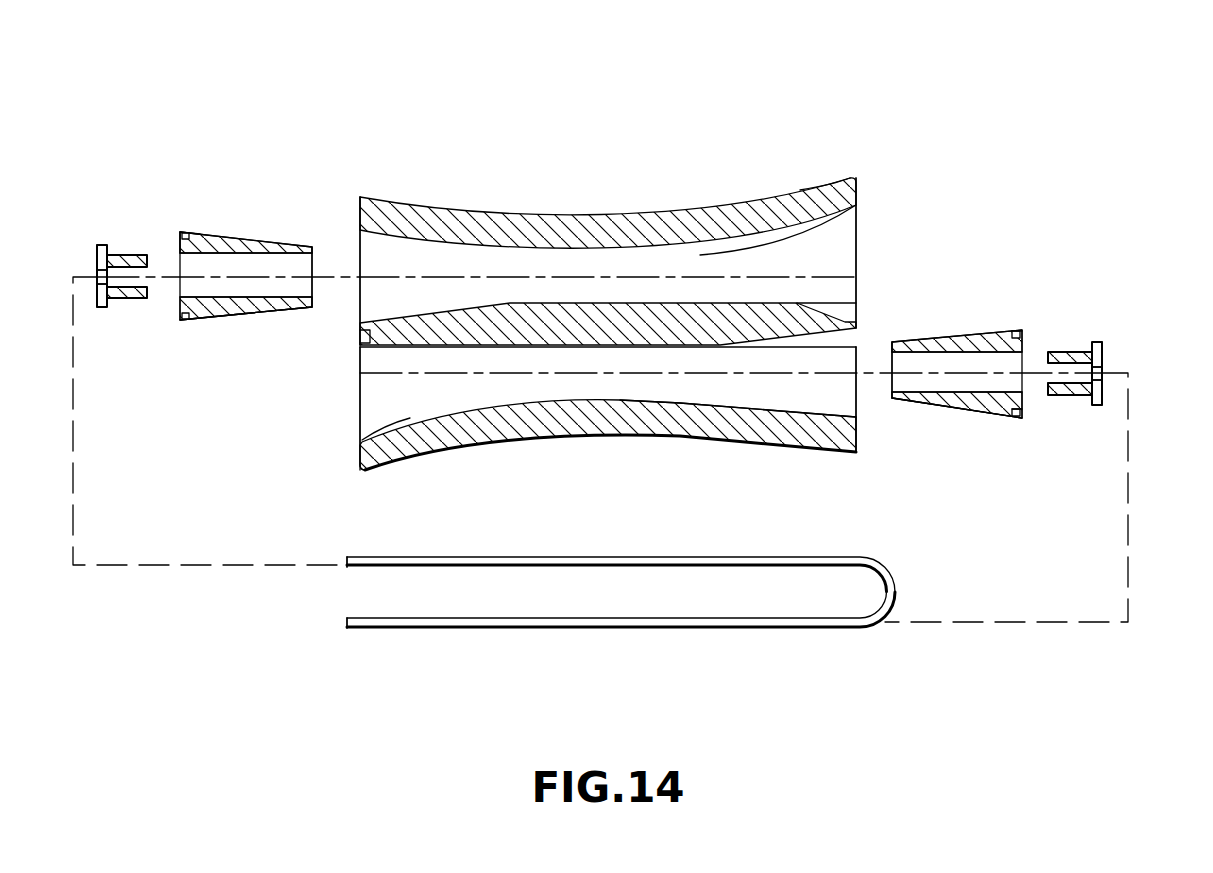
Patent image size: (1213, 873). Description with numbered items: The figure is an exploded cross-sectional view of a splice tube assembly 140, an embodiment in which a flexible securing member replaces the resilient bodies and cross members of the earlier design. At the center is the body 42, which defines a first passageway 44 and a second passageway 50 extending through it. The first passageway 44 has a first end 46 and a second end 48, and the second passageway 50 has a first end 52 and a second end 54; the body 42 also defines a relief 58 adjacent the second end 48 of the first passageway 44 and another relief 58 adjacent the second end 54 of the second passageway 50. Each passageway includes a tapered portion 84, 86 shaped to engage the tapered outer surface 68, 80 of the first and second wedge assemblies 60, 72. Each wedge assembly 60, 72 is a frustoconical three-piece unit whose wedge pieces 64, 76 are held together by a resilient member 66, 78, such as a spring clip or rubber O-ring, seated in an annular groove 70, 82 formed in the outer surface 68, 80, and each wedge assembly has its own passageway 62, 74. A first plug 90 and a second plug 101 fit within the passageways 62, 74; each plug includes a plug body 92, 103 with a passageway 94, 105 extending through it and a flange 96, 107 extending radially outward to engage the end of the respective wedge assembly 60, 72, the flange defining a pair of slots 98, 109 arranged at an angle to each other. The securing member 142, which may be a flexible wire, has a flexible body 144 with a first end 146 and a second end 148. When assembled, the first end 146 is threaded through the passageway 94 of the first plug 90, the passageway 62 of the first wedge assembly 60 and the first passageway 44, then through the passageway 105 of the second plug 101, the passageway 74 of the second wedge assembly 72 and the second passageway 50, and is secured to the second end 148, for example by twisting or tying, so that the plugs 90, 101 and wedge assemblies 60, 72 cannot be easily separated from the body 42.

The splice tube assembly 140 is at (390, 88).
The body 42 is at (610, 232).
The first passageway 44 is at (786, 256).
The first end of the first passageway 46 is at (360, 247).
The second end of the first passageway 48 is at (857, 243).
The second passageway 50 is at (612, 386).
The first end of the second passageway 52 is at (857, 405).
The second end of the second passageway 54 is at (360, 392).
The relief 58 is at (856, 205).
The first wedge assembly 60 is at (222, 246).
The passageway of the first wedge assembly 62 is at (270, 264).
The wedge pieces 64 is at (196, 316).
The resilient member 66 is at (190, 232).
The tapered outer surface 68 is at (280, 246).
The annular groove 70 is at (186, 230).
The second wedge assembly 72 is at (974, 338).
The passageway of the second wedge assembly 74 is at (1010, 358).
The wedge pieces 76 is at (978, 410).
The resilient member 78 is at (1010, 414).
The tapered outer surface 80 is at (926, 404).
The annular groove 82 is at (1014, 332).
The tapered portion of the first passageway 84 is at (418, 238).
The tapered portion of the second passageway 86 is at (760, 403).
The first plug 90 is at (121, 298).
The plug body 92 is at (130, 252).
The passageway of the first plug 94 is at (97, 293).
The flange 96 is at (97, 258).
The slots 98 is at (97, 277).
The second plug 101 is at (1100, 348).
The plug body 103 is at (1068, 398).
The passageway of the second plug 105 is at (1100, 405).
The flange 107 is at (1102, 358).
The slots 109 is at (1100, 370).
The securing member 142 is at (612, 628).
The flexible body 144 is at (505, 628).
The first end of the flexible body 146 is at (347, 562).
The second end of the flexible body 148 is at (347, 630).